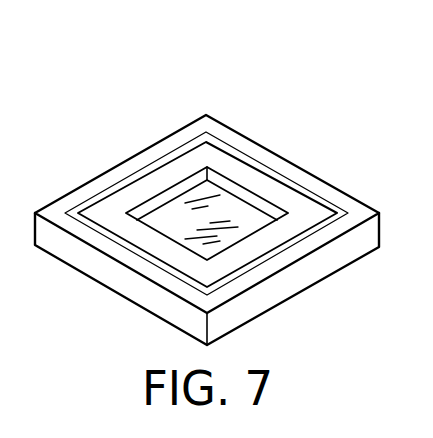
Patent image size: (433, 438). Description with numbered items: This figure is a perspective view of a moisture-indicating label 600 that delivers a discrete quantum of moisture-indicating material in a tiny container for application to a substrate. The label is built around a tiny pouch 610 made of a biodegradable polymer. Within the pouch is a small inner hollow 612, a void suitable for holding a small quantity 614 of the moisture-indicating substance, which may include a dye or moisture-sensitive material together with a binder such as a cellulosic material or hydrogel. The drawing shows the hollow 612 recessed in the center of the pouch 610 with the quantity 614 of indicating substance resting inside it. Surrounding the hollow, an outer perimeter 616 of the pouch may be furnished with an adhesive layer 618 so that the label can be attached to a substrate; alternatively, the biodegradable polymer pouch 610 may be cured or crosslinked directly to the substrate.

The moisture-indicating label 600 is at (200, 180).
The pouch 610 is at (325, 259).
The inner hollow 612 is at (172, 228).
The quantity of moisture-indicating substance 614 is at (172, 214).
The outer perimeter 616 is at (335, 200).
The adhesive layer 618 is at (270, 170).